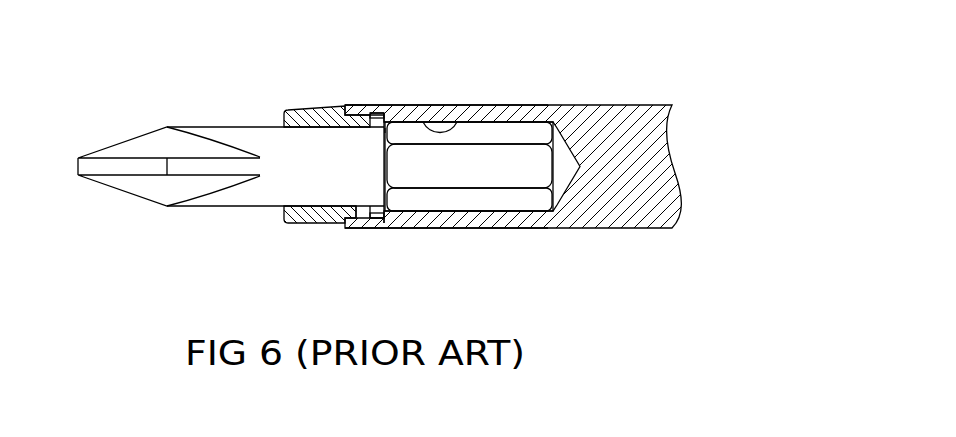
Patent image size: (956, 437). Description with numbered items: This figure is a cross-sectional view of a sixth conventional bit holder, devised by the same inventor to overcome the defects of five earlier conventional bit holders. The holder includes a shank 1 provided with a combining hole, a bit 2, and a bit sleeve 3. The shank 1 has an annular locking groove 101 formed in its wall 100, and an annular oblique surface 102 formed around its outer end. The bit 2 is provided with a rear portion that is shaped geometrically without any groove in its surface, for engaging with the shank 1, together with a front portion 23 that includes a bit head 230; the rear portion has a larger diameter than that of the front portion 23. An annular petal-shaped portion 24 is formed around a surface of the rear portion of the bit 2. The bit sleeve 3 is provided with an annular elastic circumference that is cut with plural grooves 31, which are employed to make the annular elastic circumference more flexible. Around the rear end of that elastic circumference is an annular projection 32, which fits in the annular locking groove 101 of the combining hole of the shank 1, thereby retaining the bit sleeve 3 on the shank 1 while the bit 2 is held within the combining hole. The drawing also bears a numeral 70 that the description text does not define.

The shank 1 is at (520, 128).
The bit 2 is at (454, 122).
The bit sleeve 3 is at (325, 124).
The front portion 23 is at (280, 155).
The bit head 230 is at (148, 143).
The annular petal-shaped portion 24 is at (398, 115).
The annular projection 32 is at (377, 113).
The annular oblique surface 102 is at (356, 107).
The wall 100 is at (465, 122).
The ball 70 is at (385, 130).
The grooves 31 is at (360, 236).
The annular locking groove 101 is at (392, 242).